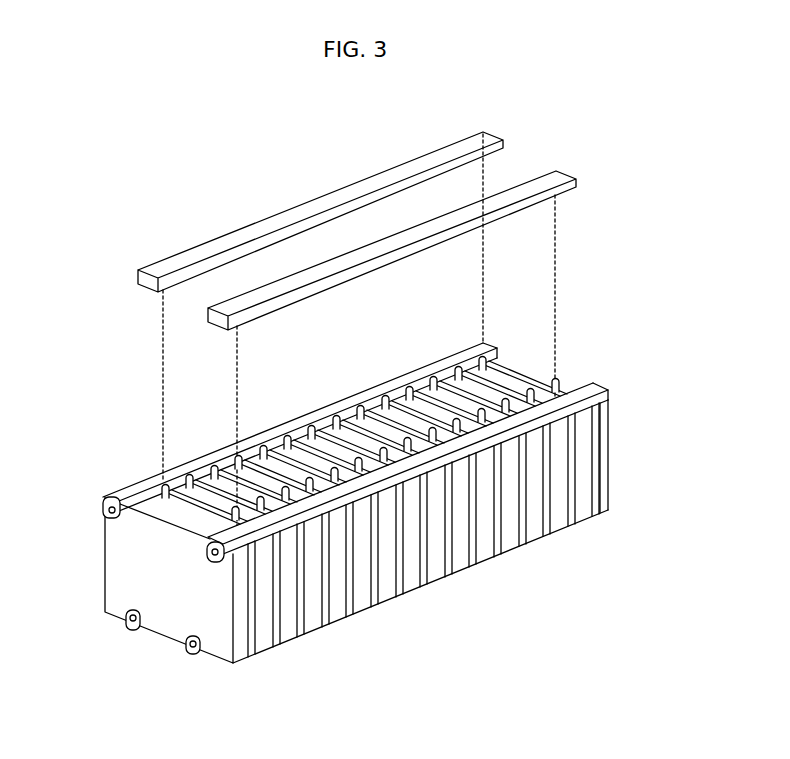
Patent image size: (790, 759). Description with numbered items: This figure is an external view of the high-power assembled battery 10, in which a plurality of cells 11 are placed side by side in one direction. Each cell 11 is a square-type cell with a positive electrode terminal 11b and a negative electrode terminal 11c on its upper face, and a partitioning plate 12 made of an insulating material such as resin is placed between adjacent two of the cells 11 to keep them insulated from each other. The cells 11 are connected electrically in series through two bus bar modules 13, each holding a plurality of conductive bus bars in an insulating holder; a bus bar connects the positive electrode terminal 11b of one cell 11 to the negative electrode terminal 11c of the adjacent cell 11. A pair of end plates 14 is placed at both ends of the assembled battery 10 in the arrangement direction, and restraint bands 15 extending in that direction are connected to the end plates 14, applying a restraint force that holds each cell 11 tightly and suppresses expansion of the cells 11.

The high-power assembled battery 10 is at (434, 638).
The cell 11 is at (185, 515).
The positive electrode terminal 11b is at (140, 495).
The negative electrode terminal 11c is at (481, 352).
The partitioning plate 12 is at (177, 470).
The bus bar module 13 is at (271, 227).
The end plate 14 is at (118, 573).
The restraint band 15 is at (321, 416).